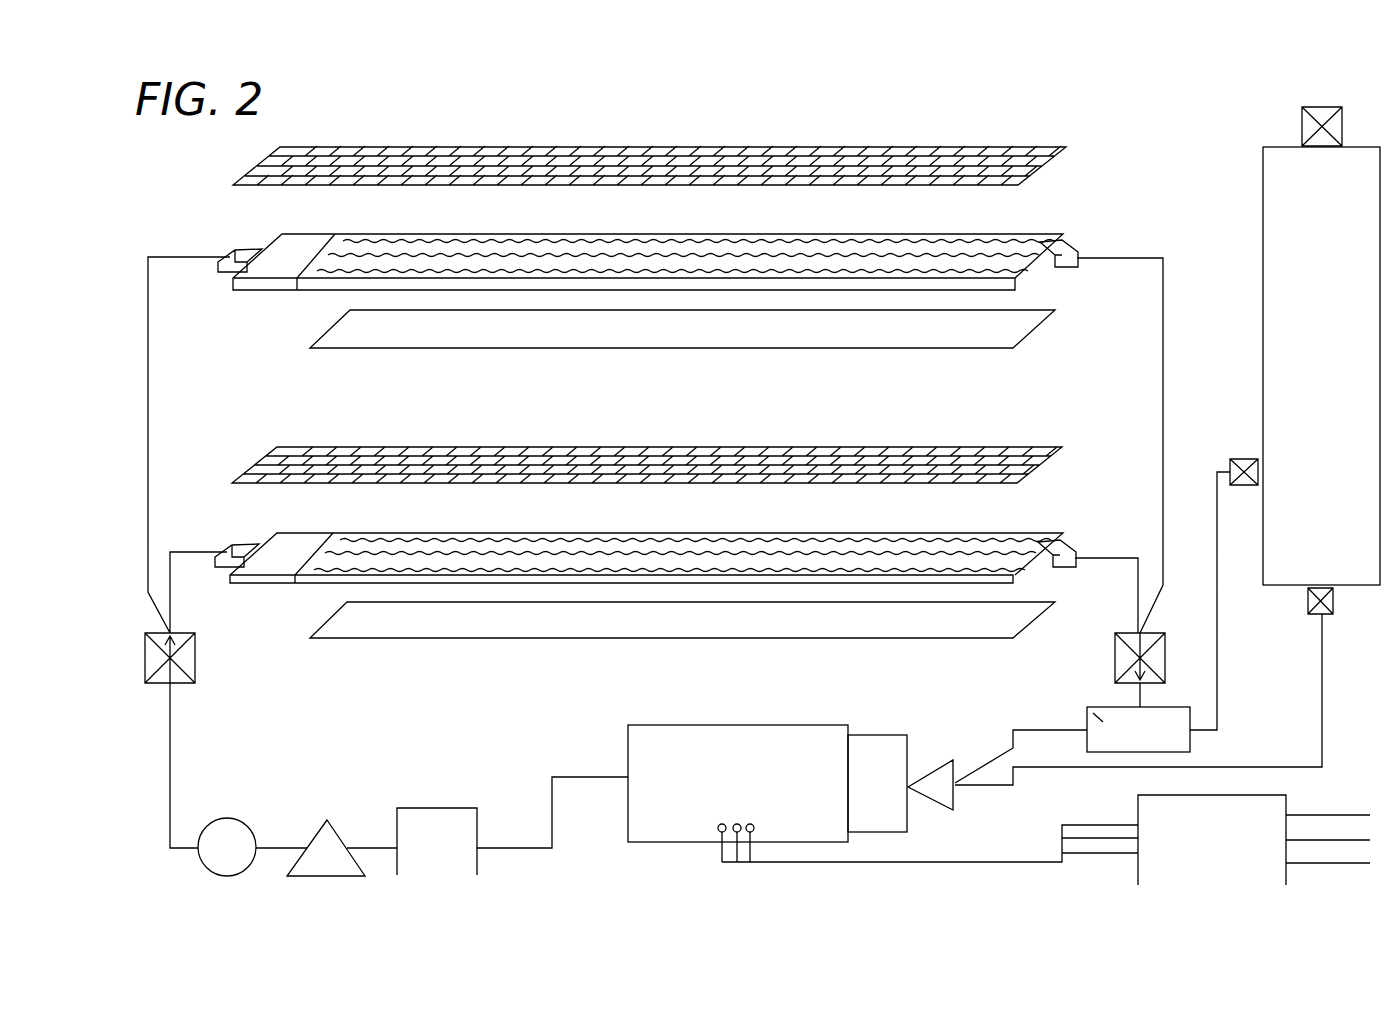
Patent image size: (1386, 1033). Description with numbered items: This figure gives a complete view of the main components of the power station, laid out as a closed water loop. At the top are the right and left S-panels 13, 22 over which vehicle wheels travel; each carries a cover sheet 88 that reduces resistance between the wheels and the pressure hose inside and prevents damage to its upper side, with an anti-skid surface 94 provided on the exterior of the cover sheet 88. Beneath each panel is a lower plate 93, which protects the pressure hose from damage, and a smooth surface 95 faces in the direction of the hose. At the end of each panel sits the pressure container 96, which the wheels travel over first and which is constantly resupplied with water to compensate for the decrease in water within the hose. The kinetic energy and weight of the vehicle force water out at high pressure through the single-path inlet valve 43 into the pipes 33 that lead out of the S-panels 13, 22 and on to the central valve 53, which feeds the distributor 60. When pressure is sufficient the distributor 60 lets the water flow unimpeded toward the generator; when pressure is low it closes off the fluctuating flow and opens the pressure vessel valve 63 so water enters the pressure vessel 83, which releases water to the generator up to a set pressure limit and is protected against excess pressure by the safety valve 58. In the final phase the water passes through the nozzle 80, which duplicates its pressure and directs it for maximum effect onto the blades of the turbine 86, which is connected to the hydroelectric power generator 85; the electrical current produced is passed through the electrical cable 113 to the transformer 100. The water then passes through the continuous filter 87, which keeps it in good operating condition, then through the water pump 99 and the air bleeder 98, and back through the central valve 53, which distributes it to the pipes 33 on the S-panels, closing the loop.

The right S-panel 13 is at (728, 258).
The left S-panel 22 is at (725, 555).
The pipes 33 is at (148, 426).
The inlet valve 43 is at (234, 252).
The central valve 53 is at (190, 660).
The safety valve 58 is at (1302, 120).
The distributor 60 is at (1085, 713).
The pressure vessel valve 63 is at (1246, 460).
The nozzle 80 is at (936, 782).
The pressure vessel 83 is at (1303, 350).
The hydroelectric power generator 85 is at (737, 746).
The turbine 86 is at (874, 768).
The filter 87 is at (427, 840).
The cover sheet 88 is at (394, 148).
The lower plate 93 is at (404, 332).
The anti-skid surface 94 is at (649, 292).
The smooth surface 95 is at (682, 510).
The pressure container 96 is at (296, 261).
The air bleeder 98 is at (230, 832).
The water pump 99 is at (328, 850).
The transformer 100 is at (1172, 812).
The electrical cable 113 is at (1010, 862).